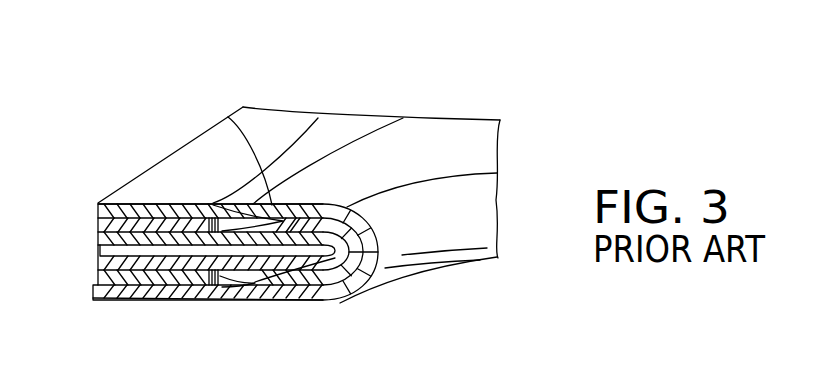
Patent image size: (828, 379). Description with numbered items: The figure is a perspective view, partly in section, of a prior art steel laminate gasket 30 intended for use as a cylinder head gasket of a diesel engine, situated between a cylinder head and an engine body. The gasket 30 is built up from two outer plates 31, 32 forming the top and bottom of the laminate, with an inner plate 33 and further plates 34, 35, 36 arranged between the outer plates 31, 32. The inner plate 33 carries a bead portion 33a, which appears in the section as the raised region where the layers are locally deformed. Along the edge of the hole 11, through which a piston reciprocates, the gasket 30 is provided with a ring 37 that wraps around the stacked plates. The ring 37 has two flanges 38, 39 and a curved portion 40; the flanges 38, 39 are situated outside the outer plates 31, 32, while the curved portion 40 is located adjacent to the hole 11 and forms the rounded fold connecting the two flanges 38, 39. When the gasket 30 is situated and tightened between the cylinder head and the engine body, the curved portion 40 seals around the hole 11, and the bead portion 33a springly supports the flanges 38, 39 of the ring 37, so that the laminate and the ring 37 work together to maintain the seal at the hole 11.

The steel laminate gasket 30 is at (281, 96).
The outer plate 31 is at (147, 195).
The bead portion 33a is at (228, 117).
The plate 35 is at (100, 203).
The plate 36 is at (105, 243).
The inner plate 33 is at (105, 303).
The plate 34 is at (130, 303).
The outer plate 32 is at (183, 303).
The flange 39 is at (293, 294).
The ring 37 is at (423, 130).
The flange 38 is at (343, 157).
The curved portion 40 is at (477, 227).
The hole 11 is at (440, 263).